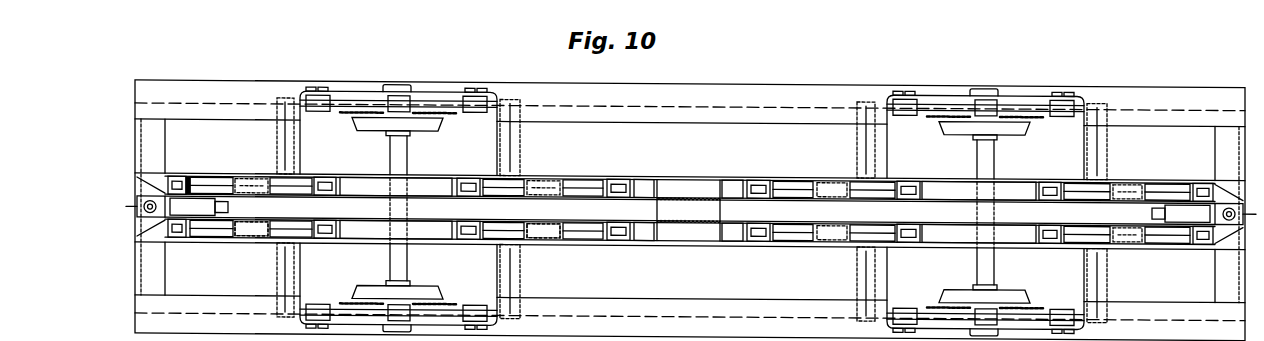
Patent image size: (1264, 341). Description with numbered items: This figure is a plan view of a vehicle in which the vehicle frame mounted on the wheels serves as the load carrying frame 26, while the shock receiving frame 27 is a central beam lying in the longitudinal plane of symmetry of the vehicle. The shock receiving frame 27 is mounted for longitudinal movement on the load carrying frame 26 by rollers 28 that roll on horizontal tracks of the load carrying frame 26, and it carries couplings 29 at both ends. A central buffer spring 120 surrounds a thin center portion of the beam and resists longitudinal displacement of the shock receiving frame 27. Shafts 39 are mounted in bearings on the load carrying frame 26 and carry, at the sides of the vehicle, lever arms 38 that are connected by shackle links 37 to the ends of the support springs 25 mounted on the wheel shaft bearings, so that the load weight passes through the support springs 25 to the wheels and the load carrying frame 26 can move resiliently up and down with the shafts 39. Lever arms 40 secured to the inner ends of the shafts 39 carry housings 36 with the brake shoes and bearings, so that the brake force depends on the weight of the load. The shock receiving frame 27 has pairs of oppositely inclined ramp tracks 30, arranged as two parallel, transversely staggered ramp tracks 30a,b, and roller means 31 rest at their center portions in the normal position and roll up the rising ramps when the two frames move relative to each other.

The support springs 25 is at (954, 96).
The load carrying frame 26 is at (709, 188).
The shock receiving frame 27 is at (370, 200).
The rollers 28 is at (174, 177).
The couplings 29 is at (142, 194).
The ramp tracks 30 is at (1118, 243).
The parallel ramp tracks 30a,b is at (553, 173).
The roller means 31 is at (1118, 180).
The housing 36 is at (232, 177).
The shackle links 37 is at (324, 94).
The lever arms 38 is at (478, 93).
The shafts 39 is at (506, 143).
The lever arms 40 is at (281, 170).
The central buffer spring 120 is at (680, 192).